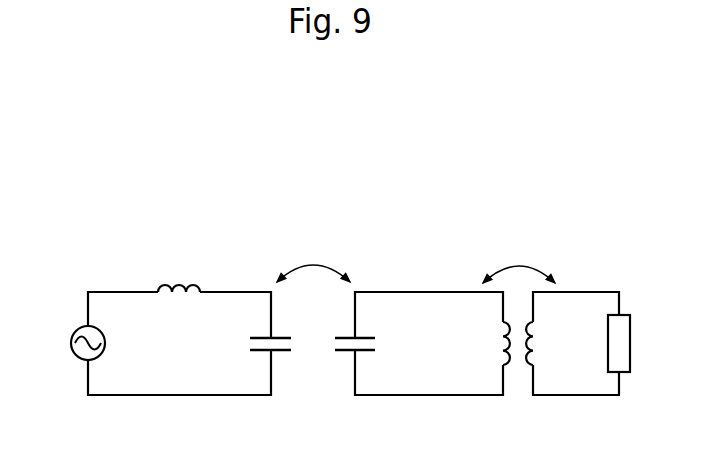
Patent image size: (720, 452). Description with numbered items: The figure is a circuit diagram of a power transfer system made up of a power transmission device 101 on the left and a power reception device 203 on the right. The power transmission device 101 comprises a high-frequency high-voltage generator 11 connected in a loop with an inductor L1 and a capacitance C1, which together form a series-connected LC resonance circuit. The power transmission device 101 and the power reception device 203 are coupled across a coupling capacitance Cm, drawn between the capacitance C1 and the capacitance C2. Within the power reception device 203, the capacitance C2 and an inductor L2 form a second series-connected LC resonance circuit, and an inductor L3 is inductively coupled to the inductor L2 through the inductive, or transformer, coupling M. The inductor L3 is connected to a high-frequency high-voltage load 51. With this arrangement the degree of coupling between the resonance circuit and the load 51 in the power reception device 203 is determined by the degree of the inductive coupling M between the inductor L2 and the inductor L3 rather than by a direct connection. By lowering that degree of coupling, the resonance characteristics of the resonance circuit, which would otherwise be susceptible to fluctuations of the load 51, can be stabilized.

The high-frequency high-voltage generator 11 is at (72, 341).
The high-frequency high-voltage load 51 is at (632, 341).
The power transmission device 101 is at (307, 227).
The power reception device 203 is at (630, 227).
The inductor L1 is at (179, 269).
The capacitance C1 is at (249, 343).
The coupling capacitance Cm is at (313, 256).
The capacitance C2 is at (376, 343).
The inductor L2 is at (489, 343).
The inductor L3 is at (550, 343).
The inductive coupling M is at (519, 256).